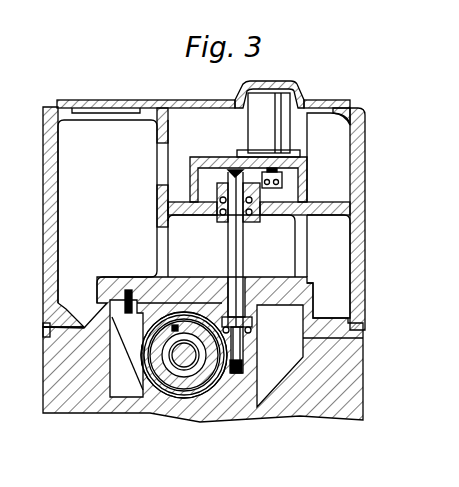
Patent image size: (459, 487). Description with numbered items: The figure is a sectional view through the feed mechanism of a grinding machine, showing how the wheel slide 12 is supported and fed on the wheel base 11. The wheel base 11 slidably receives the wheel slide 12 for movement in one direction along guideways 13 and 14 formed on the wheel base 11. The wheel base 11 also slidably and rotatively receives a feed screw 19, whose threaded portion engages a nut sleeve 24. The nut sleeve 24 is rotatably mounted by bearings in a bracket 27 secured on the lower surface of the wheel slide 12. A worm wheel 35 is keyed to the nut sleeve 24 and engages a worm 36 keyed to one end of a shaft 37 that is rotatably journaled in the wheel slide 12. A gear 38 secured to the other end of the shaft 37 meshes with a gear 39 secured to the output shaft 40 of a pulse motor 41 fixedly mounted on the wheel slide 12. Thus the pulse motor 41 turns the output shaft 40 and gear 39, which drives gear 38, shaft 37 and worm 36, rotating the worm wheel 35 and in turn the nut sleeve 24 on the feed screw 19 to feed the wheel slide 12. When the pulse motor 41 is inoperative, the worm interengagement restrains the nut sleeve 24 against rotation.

The wheel base 11 is at (355, 370).
The wheel slide 12 is at (367, 186).
The guideway 13 is at (60, 352).
The guideway 14 is at (363, 320).
The feed screw 19 is at (186, 385).
The nut sleeve 24 is at (222, 388).
The bracket 27 is at (140, 395).
The worm wheel 35 is at (202, 392).
The worm 36 is at (253, 352).
The shaft 37 is at (245, 256).
The gear 38 is at (207, 170).
The gear 39 is at (262, 195).
The output shaft 40 is at (283, 176).
The pulse motor 41 is at (290, 123).